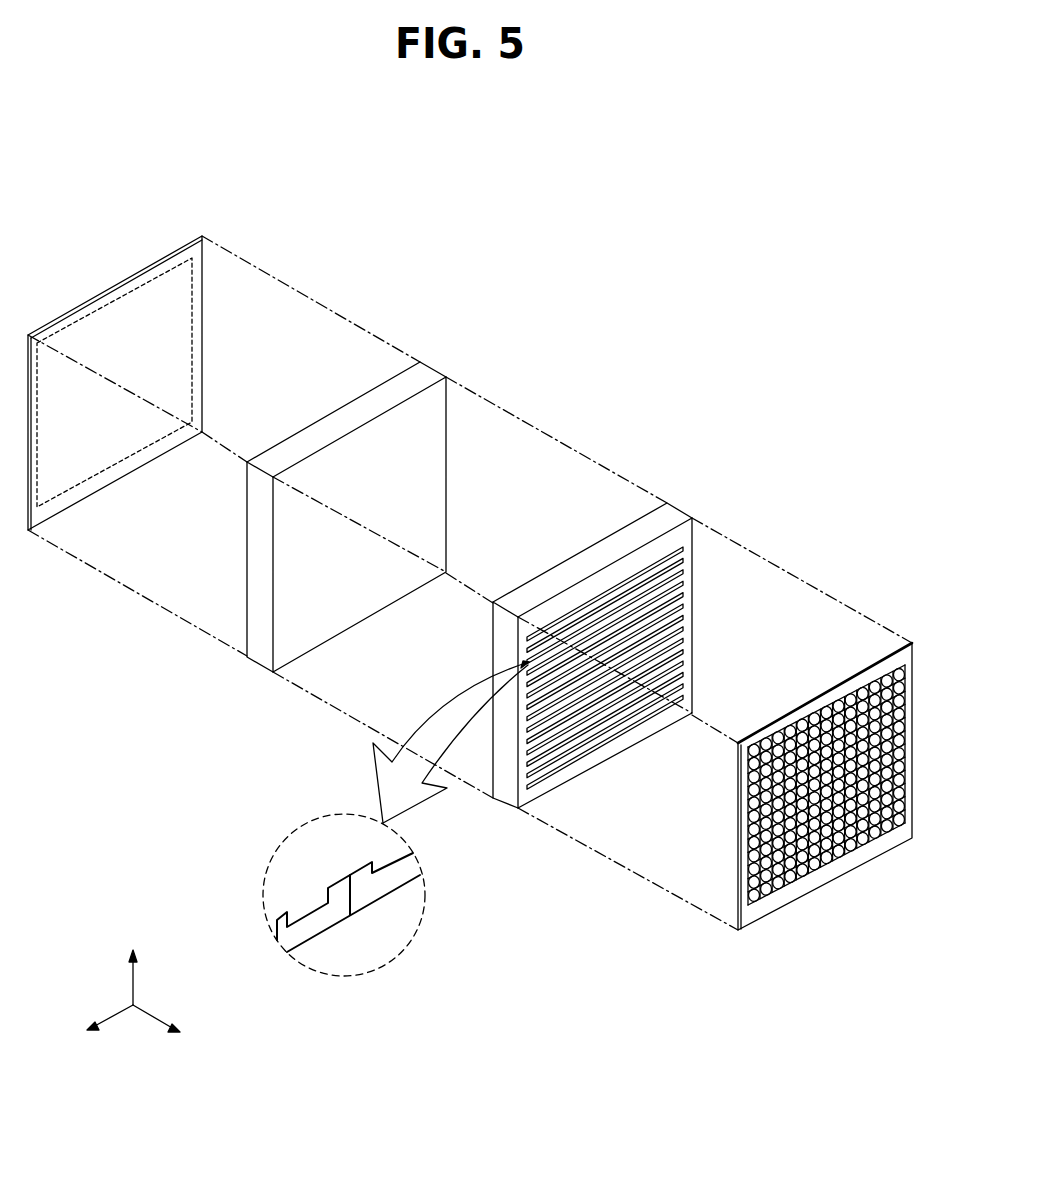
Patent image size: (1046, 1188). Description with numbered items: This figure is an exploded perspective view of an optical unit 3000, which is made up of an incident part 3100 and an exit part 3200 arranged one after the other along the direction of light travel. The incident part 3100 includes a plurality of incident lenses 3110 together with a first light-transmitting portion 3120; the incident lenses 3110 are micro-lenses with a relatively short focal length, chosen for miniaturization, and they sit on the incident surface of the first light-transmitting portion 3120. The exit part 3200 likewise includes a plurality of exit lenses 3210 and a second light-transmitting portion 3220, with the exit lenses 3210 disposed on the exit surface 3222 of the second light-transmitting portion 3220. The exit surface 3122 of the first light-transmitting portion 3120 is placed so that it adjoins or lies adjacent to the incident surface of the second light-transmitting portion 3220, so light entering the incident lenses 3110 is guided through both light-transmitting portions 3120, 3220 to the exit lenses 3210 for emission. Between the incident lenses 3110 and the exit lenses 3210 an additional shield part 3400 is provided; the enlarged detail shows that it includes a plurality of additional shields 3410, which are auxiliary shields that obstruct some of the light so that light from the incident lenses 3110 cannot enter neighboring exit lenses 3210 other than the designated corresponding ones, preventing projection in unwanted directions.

The optical unit 3000 is at (688, 227).
The incident part 3100 is at (265, 479).
The incident lenses 3110 is at (62, 498).
The first light-transmitting portion 3120 is at (260, 613).
The exit surface of the first light-transmitting portion 3122 is at (432, 447).
The exit part 3200 is at (702, 769).
The exit lenses 3210 is at (778, 897).
The second light-transmitting portion 3220 is at (503, 813).
The exit surface of the second light-transmitting portion 3222 is at (692, 588).
The additional shield part 3400 is at (337, 931).
The additional shields 3410 is at (370, 878).